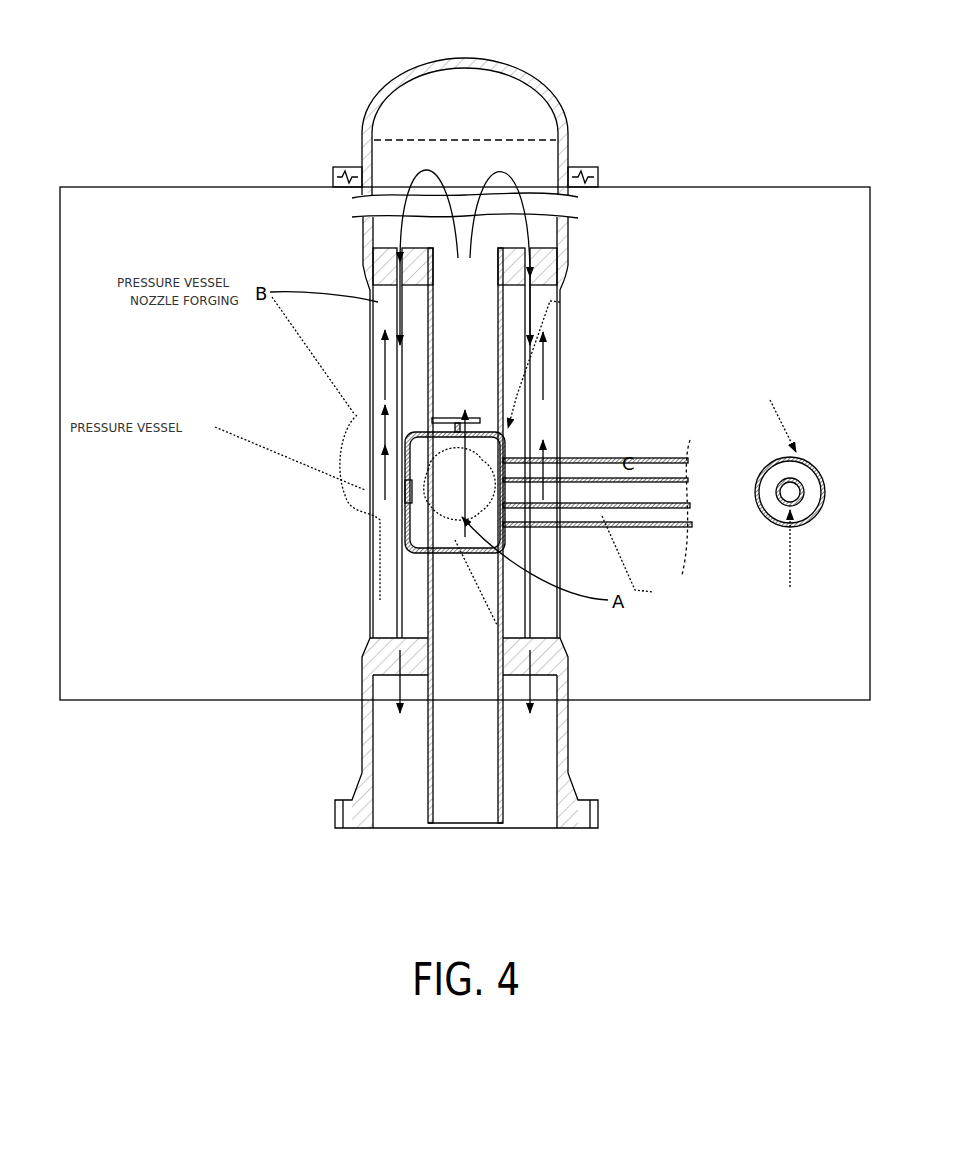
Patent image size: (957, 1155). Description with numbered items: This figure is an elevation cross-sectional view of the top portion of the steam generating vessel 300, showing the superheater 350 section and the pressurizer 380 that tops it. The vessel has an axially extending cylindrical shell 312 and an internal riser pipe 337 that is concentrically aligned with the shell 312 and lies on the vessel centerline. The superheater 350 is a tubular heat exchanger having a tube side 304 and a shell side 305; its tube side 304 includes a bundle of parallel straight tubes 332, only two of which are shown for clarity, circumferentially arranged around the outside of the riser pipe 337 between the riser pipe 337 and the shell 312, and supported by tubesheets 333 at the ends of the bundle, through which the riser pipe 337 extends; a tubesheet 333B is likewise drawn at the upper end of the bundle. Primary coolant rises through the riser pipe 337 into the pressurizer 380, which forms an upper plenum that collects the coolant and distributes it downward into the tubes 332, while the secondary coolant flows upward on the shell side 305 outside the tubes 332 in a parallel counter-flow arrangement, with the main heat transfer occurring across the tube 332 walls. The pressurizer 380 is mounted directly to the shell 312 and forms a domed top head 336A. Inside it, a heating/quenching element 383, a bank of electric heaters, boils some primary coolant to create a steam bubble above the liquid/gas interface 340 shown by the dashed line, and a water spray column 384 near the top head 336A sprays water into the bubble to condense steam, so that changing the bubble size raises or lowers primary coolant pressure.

The steam generating vessel 300 is at (330, 51).
The pressurizer 380 is at (597, 97).
The water spray column 384 is at (478, 94).
The top head 336A is at (372, 128).
The heating/quenching element 383 is at (598, 177).
The tubes 332 is at (363, 272).
The stuffing box upper wall 333B is at (534, 267).
The tube side 304 is at (535, 270).
The superheater 350 is at (288, 393).
The shell side 305 is at (405, 443).
The liquid/gas interface 340 is at (573, 446).
The shell 312 is at (599, 514).
The riser pipe 337 is at (428, 590).
The tubesheets 333 is at (560, 662).